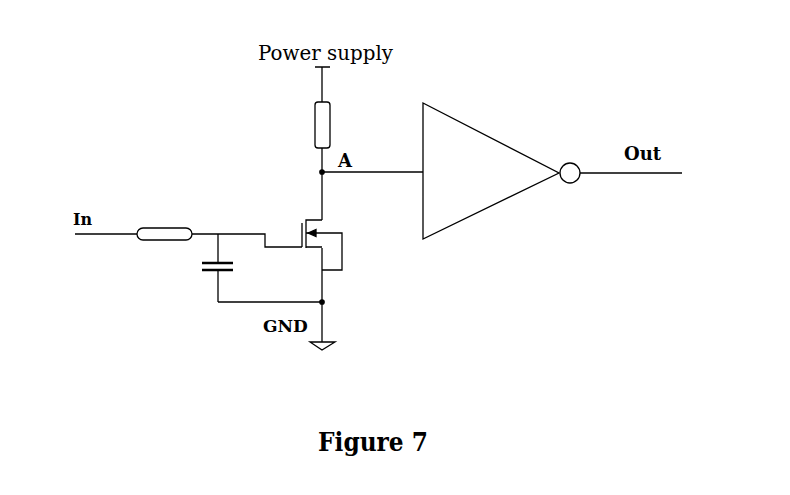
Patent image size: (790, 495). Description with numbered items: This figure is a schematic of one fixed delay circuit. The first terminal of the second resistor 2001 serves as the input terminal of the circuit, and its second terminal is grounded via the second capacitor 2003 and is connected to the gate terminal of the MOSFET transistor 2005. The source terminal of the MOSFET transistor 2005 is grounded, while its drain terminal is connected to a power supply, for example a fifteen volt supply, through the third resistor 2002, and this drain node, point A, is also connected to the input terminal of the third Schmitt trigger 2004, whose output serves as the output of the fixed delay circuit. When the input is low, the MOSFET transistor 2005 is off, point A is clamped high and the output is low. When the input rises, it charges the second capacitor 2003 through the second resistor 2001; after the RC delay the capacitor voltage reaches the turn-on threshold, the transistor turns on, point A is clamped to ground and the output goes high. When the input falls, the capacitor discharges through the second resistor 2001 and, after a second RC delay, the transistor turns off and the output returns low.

The second resistor 2001 is at (163, 240).
The third resistor 2002 is at (320, 118).
The second capacitor 2003 is at (203, 272).
The third Schmitt trigger 2004 is at (490, 208).
The MOSFET transistor 2005 is at (342, 252).